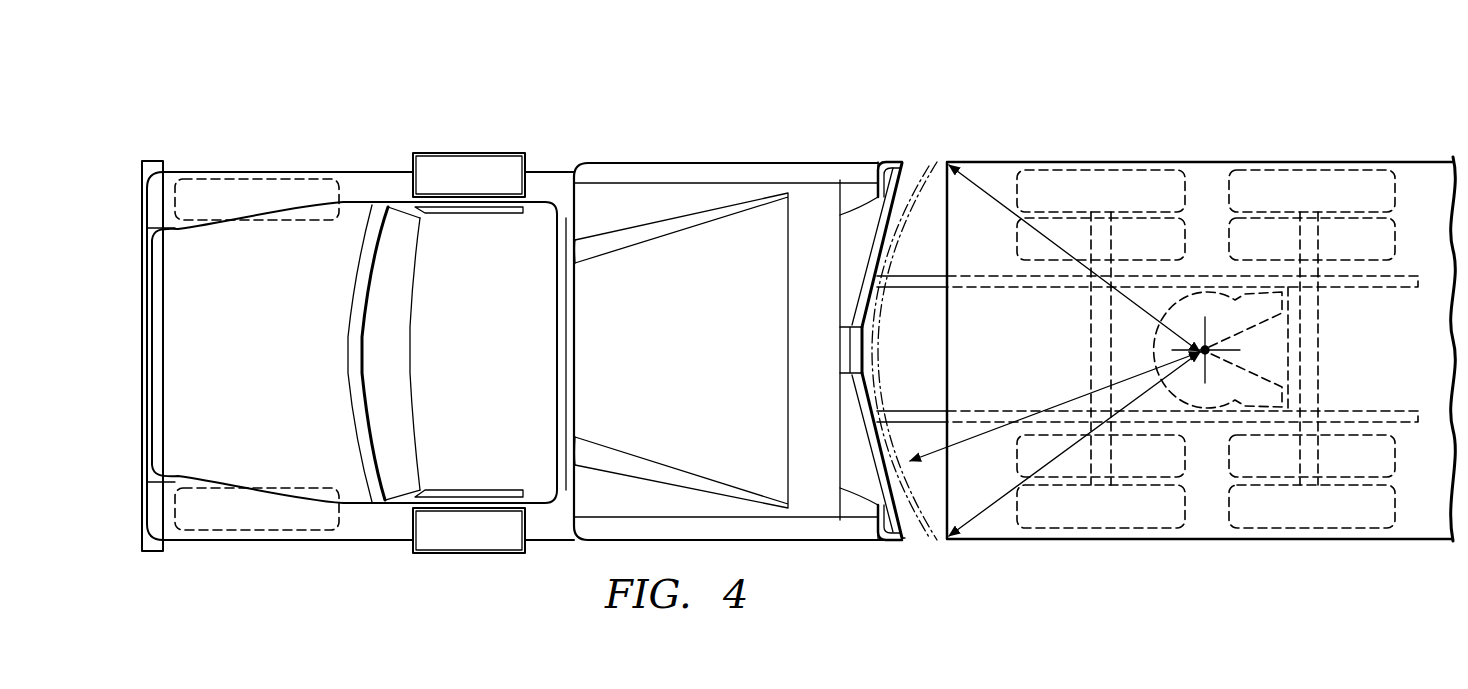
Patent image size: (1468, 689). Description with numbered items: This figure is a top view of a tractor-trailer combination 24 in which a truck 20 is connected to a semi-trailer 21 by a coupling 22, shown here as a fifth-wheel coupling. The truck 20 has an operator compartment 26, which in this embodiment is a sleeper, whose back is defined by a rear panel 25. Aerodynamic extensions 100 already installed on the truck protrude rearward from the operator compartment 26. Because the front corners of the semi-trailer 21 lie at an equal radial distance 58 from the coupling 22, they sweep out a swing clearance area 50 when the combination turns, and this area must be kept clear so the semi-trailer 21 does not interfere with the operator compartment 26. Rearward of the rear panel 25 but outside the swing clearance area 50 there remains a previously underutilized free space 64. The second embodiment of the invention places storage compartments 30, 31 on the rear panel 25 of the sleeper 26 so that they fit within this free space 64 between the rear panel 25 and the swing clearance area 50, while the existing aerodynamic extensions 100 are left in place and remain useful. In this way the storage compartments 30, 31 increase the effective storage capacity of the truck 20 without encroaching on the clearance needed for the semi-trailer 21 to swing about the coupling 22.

The truck 20 is at (450, 107).
The semi-trailer 21 is at (1212, 160).
The coupling 22 is at (1300, 312).
The tractor-trailer combination 24 is at (949, 63).
The rear panel 25 is at (847, 353).
The operator compartment 26 is at (685, 366).
The storage compartment 30 is at (853, 442).
The storage compartment 31 is at (853, 257).
The swing clearance area 50 is at (933, 210).
The radial distance 58 is at (985, 190).
The underutilized free space 64 is at (922, 540).
The aerodynamic extensions 100 is at (868, 160).